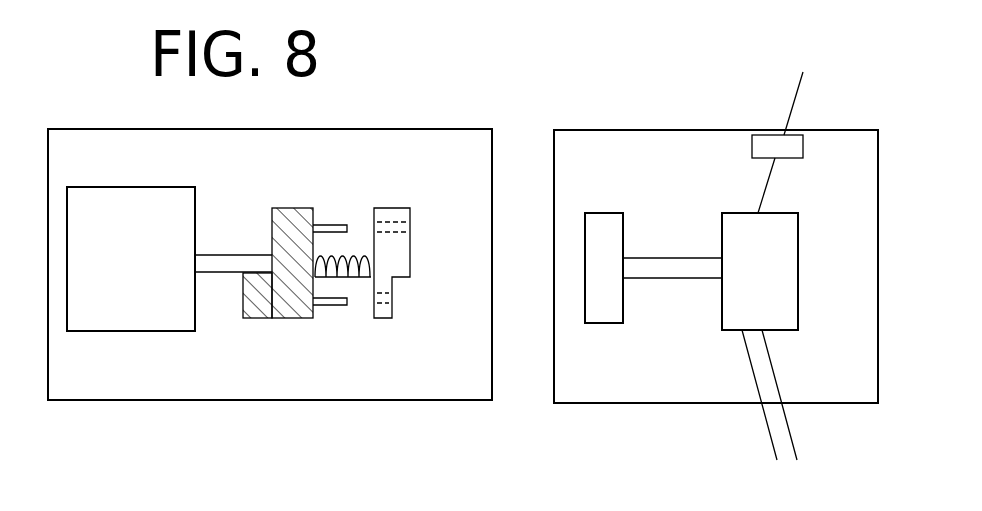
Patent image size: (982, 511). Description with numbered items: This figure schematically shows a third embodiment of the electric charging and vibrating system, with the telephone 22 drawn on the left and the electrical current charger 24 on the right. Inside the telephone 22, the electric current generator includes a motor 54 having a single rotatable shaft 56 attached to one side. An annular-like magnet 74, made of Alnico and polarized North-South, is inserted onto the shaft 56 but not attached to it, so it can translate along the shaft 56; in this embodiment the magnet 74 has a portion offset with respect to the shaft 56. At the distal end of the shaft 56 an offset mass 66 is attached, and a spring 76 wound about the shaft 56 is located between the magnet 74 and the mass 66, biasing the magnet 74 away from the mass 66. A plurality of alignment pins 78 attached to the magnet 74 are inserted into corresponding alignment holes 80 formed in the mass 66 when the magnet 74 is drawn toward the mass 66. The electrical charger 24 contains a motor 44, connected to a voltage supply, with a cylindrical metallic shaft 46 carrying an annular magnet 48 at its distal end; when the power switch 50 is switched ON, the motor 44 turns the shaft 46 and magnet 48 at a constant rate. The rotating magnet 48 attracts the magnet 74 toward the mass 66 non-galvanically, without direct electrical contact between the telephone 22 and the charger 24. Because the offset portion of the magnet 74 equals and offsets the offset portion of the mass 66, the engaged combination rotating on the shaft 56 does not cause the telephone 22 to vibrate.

The telephone 22 is at (437, 148).
The electrical current charger 24 is at (866, 160).
The motor 44 is at (785, 270).
The rotatable shaft 46 is at (680, 258).
The annular magnet 48 is at (606, 232).
The power switch 50 is at (800, 95).
The motor 54 is at (93, 207).
The rotatable shaft 56 is at (212, 256).
The offset mass 66 is at (405, 244).
The magnet 74 is at (279, 317).
The spring 76 is at (356, 280).
The alignment pins 78 is at (333, 226).
The alignment holes 80 is at (392, 298).